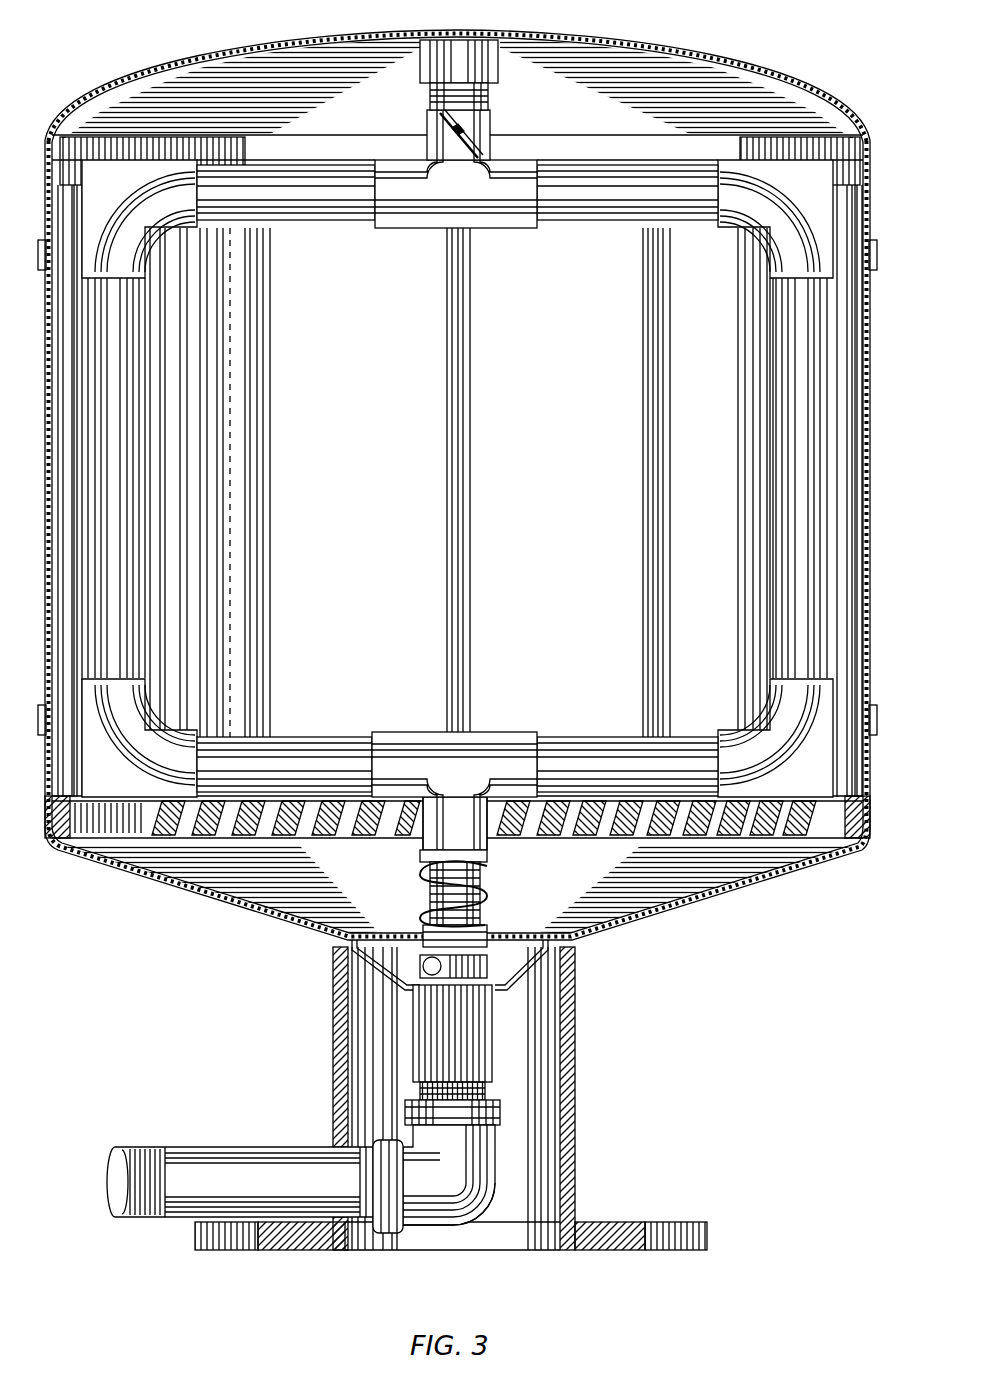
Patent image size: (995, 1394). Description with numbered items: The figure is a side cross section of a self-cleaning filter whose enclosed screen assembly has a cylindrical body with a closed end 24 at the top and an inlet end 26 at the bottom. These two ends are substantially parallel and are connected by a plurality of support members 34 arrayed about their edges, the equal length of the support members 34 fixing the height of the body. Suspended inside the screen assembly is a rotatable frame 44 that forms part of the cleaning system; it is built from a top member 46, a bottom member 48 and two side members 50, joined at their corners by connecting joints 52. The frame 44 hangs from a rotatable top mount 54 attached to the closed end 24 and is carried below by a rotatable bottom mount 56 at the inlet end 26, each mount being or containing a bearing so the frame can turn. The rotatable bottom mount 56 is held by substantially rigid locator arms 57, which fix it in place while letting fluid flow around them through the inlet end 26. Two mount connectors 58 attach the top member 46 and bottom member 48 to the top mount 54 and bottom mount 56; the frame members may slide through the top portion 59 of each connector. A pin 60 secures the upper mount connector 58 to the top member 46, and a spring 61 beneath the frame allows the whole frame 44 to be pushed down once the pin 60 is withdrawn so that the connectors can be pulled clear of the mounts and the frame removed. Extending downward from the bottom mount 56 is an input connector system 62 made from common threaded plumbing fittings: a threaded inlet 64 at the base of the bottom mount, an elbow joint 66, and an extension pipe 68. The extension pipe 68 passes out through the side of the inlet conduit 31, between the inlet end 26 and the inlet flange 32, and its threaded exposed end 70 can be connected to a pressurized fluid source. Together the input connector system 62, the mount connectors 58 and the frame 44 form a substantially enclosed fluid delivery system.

The closed end 24 is at (662, 56).
The inlet end 26 is at (700, 922).
The inlet conduit 31 is at (577, 1100).
The inlet flange 32 is at (615, 1225).
The support members 34 is at (258, 296).
The frame 44 is at (592, 226).
The top member 46 is at (292, 213).
The bottom member 48 is at (558, 740).
The side members 50 is at (115, 470).
The connecting joints 52 is at (142, 250).
The rotatable top mount 54 is at (492, 100).
The rotatable bottom mount 56 is at (487, 918).
The locator arms 57 is at (498, 985).
The mount connectors 58 is at (410, 213).
The top portion 59 is at (428, 730).
The pin 60 is at (437, 120).
The spring 61 is at (425, 890).
The input connector system 62 is at (478, 1232).
The threaded inlet 64 is at (490, 1057).
The elbow joint 66 is at (446, 1188).
The extension pipe 68 is at (240, 1150).
The exposed end 70 is at (108, 1180).